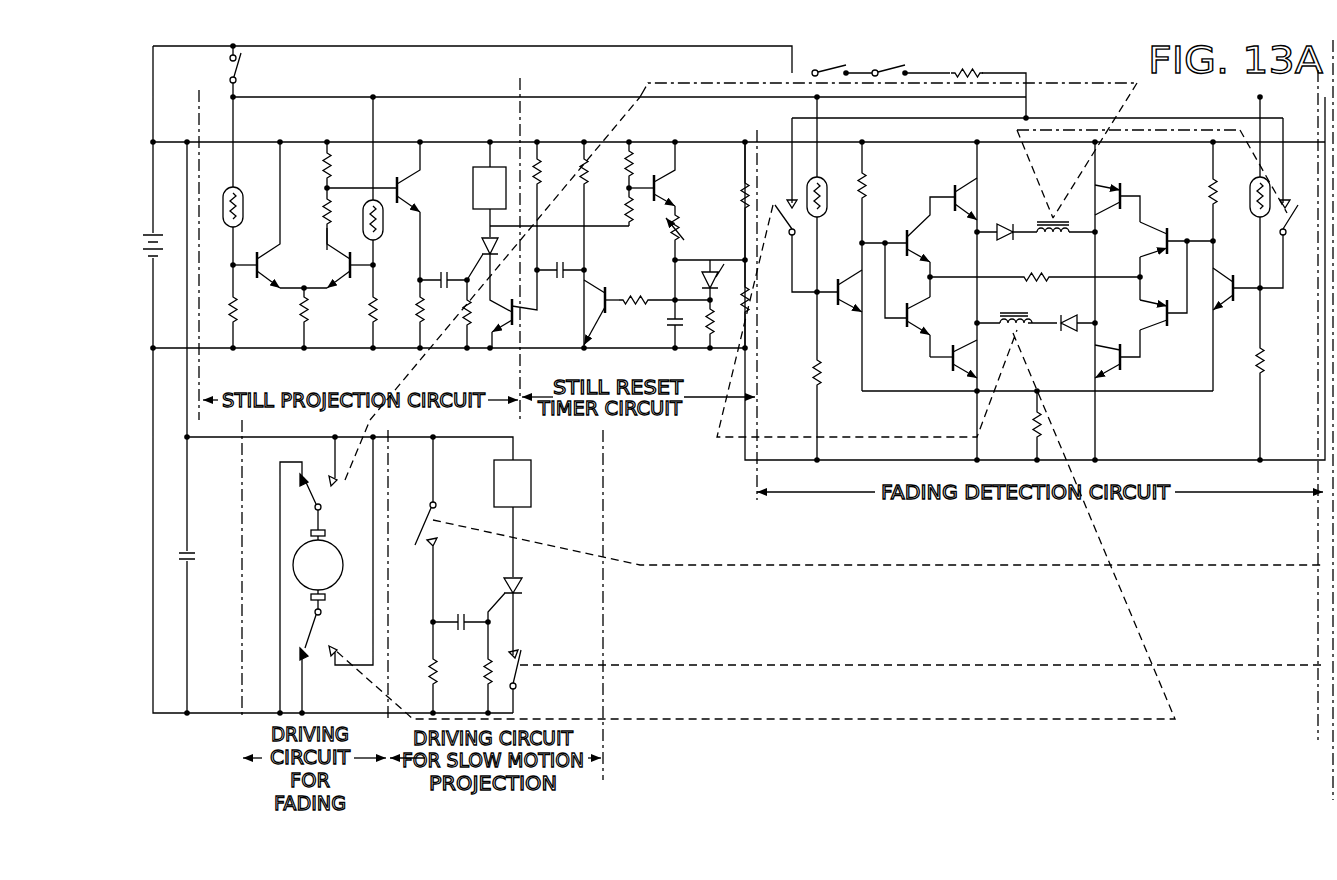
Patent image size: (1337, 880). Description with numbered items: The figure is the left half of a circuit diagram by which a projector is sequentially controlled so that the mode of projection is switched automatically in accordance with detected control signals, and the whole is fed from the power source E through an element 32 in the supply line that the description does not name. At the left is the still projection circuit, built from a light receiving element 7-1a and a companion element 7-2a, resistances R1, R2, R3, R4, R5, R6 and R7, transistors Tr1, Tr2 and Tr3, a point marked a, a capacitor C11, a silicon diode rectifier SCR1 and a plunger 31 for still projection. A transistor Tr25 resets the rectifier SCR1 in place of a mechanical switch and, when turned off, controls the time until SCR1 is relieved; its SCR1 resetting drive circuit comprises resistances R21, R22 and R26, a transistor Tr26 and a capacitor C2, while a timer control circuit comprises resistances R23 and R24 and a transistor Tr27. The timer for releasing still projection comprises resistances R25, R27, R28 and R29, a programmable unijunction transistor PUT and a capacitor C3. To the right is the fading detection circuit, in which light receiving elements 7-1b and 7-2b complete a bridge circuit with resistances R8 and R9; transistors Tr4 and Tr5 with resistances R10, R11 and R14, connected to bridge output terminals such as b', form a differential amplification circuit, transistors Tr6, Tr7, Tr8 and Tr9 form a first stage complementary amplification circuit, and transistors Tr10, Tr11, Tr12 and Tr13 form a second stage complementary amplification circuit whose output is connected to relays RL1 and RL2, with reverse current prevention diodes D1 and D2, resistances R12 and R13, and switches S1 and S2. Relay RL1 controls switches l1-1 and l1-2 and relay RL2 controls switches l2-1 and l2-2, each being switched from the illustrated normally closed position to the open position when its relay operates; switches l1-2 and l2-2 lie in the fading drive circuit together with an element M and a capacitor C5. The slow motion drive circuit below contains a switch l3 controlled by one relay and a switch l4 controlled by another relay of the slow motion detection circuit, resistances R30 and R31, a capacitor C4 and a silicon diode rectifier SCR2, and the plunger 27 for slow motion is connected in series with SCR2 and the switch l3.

The power source E is at (160, 260).
The main switch 32 is at (218, 71).
The light receiving element 7-1a is at (231, 200).
The resistance R4 is at (331, 170).
The resistance R5 is at (323, 215).
The transistor Tr1 is at (280, 215).
The transistor Tr2 is at (331, 259).
The terminal a is at (226, 273).
The lamp 7-2a is at (392, 185).
The resistance R1 is at (243, 308).
The resistance R3 is at (316, 316).
The resistance R2 is at (379, 320).
The transistor Tr3 is at (396, 211).
The plunger for still projection 31 is at (489, 183).
The resistance R6 is at (418, 310).
The capacitor C11 is at (448, 275).
The resistance R7 is at (464, 324).
The silicon diode rectifier SCR1 is at (485, 240).
The transistor Tr25 is at (516, 309).
The resistance R21 is at (540, 182).
The resistance R22 is at (603, 245).
The capacitor C2 is at (563, 266).
The transistor Tr26 is at (580, 312).
The resistance R26 is at (637, 290).
The resistance R23 is at (633, 178).
The resistance R24 is at (634, 228).
The transistor Tr27 is at (668, 186).
The resistance R28 is at (680, 222).
The resistance R25 is at (745, 214).
The programmable unijunction transistor PUT is at (717, 269).
The capacitor C3 is at (668, 323).
The resistance R27 is at (710, 340).
The resistance R29 is at (752, 298).
The switch S1 is at (843, 60).
The switch S2 is at (911, 60).
The resistance R13 is at (971, 61).
The switch l2-1 is at (797, 205).
The light receiving element 7-1b is at (822, 180).
The resistance R8 is at (812, 374).
The transistor Tr4 is at (838, 279).
The resistance R10 is at (868, 184).
The transistor Tr6 is at (905, 230).
The transistor Tr7 is at (915, 298).
The transistor Tr11 is at (954, 346).
The transistor Tr10 is at (962, 192).
The reverse current prevention diode D1 is at (1000, 226).
The relay RL1 is at (1063, 242).
The relay RL2 is at (1017, 306).
The resistance R12 is at (1046, 283).
The reverse current prevention diode D2 is at (1072, 344).
The transistor Tr13 is at (1112, 348).
The transistor Tr12 is at (1117, 186).
The transistor Tr8 is at (1160, 246).
The transistor Tr9 is at (1163, 328).
The resistance R11 is at (1207, 196).
The transistor Tr5 is at (1238, 278).
The light receiving element 7-2b is at (1250, 200).
The resistance R9 is at (1266, 358).
The output terminal b' is at (1275, 313).
The switch l1-1 is at (1294, 203).
The resistance R14 is at (1012, 425).
The capacitor C5 is at (209, 540).
The switch l1-2 is at (323, 575).
The motor M is at (318, 569).
The switch l2-2 is at (336, 575).
The switch l4 is at (441, 529).
The plunger for slow motion 27 is at (512, 518).
The silicon diode rectifier SCR2 is at (503, 596).
The switch l3 is at (525, 669).
The capacitor C4 is at (460, 632).
The resistance R30 is at (428, 670).
The resistance R31 is at (484, 678).